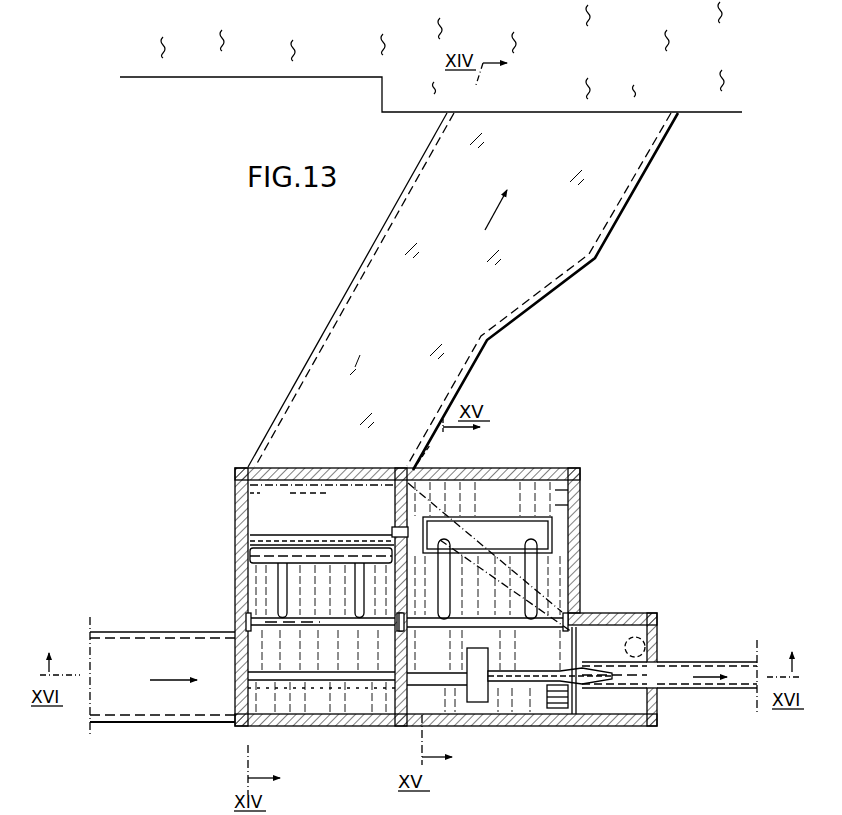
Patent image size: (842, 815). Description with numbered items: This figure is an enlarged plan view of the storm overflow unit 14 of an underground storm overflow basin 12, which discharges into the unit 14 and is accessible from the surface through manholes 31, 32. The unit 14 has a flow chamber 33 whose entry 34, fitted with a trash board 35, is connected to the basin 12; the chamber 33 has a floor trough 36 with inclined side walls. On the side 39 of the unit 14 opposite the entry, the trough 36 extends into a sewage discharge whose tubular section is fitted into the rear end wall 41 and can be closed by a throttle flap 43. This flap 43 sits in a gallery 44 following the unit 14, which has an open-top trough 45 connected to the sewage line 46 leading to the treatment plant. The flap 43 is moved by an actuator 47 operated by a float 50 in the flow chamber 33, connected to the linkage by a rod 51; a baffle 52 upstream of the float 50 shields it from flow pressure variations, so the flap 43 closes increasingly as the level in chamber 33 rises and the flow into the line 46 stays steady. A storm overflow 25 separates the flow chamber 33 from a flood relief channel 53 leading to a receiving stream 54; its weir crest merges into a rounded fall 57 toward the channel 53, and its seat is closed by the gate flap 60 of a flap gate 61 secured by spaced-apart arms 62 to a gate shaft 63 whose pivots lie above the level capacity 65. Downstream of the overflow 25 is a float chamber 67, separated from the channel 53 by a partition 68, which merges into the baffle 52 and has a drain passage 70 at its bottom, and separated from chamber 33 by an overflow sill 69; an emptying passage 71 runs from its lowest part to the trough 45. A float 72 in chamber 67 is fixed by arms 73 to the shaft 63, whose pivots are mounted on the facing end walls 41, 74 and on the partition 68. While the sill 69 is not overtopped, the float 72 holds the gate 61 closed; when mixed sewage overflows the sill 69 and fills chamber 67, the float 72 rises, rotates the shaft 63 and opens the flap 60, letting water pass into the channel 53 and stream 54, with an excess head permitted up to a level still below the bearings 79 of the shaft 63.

The basin 12 is at (162, 700).
The storm overflow unit 14 is at (180, 450).
The storm overflow 25 is at (340, 634).
The manhole 31 is at (559, 712).
The manhole 32 is at (641, 637).
The flow chamber 33 is at (372, 711).
The entry 34 is at (236, 716).
The trash board 35 is at (250, 701).
The floor trough 36 is at (300, 681).
The side of the overflow unit 39 is at (590, 720).
The rear end wall 41 is at (580, 494).
The throttle flap 43 is at (620, 674).
The gallery 44 is at (636, 714).
The open-top trough 45 is at (650, 667).
The sewage line 46 is at (696, 668).
The actuator 47 is at (652, 700).
The float 50 is at (478, 706).
The rod 51 is at (512, 703).
The baffle 52 is at (476, 700).
The flood relief channel 53 is at (434, 327).
The receiving stream 54 is at (560, 49).
The rounded fall 57 is at (284, 507).
The gate flap 60 is at (372, 555).
The flap gate 61 is at (325, 545).
The arms 62 is at (287, 598).
The gate shaft 63 is at (297, 628).
The level capacity 65 is at (449, 806).
The float chamber 67 is at (560, 575).
The partition 68 is at (432, 470).
The overflow sill 69 is at (556, 590).
The drain passage 70 is at (378, 532).
The emptying passage 71 is at (592, 655).
The float 72 is at (493, 530).
The arms 73 is at (451, 584).
The end wall 74 is at (238, 532).
The bearings 79 is at (247, 619).